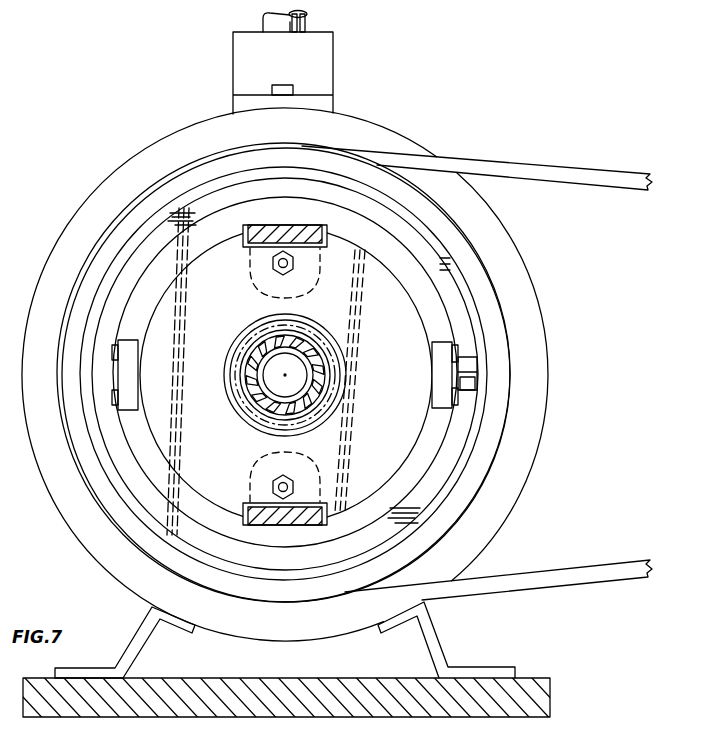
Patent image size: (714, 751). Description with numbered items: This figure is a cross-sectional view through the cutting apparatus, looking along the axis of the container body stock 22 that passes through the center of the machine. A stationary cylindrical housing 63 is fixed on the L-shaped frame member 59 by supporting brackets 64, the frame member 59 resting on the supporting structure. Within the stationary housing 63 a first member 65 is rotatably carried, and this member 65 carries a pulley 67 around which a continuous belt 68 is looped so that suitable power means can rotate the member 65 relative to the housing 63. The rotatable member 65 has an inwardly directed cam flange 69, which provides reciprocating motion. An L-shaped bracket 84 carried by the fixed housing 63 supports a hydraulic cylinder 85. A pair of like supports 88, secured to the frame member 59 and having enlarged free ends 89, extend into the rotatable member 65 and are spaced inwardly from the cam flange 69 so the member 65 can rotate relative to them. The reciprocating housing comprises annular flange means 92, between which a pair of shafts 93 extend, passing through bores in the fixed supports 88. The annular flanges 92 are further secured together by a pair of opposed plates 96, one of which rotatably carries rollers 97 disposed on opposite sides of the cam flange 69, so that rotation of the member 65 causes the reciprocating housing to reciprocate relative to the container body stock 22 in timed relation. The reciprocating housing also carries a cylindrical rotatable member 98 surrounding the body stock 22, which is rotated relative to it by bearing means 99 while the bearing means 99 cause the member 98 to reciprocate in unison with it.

The container body stock 22 is at (310, 380).
The frame member 59 is at (552, 698).
The cylindrical housing 63 is at (147, 148).
The supporting brackets 64 is at (135, 655).
The first member 65 is at (475, 297).
The pulley 67 is at (457, 235).
The continuous belt 68 is at (592, 172).
The cam flange 69 is at (433, 490).
The L-shaped bracket 84 is at (333, 52).
The hydraulic cylinder 85 is at (307, 15).
The supports 88 is at (288, 208).
The enlarged free ends 89 is at (317, 292).
The annular flange means 92 is at (410, 433).
The shafts 93 is at (295, 261).
The plates 96 is at (130, 352).
The rollers 97 is at (470, 370).
The rotatable member 98 is at (313, 405).
The bearing means 99 is at (226, 393).